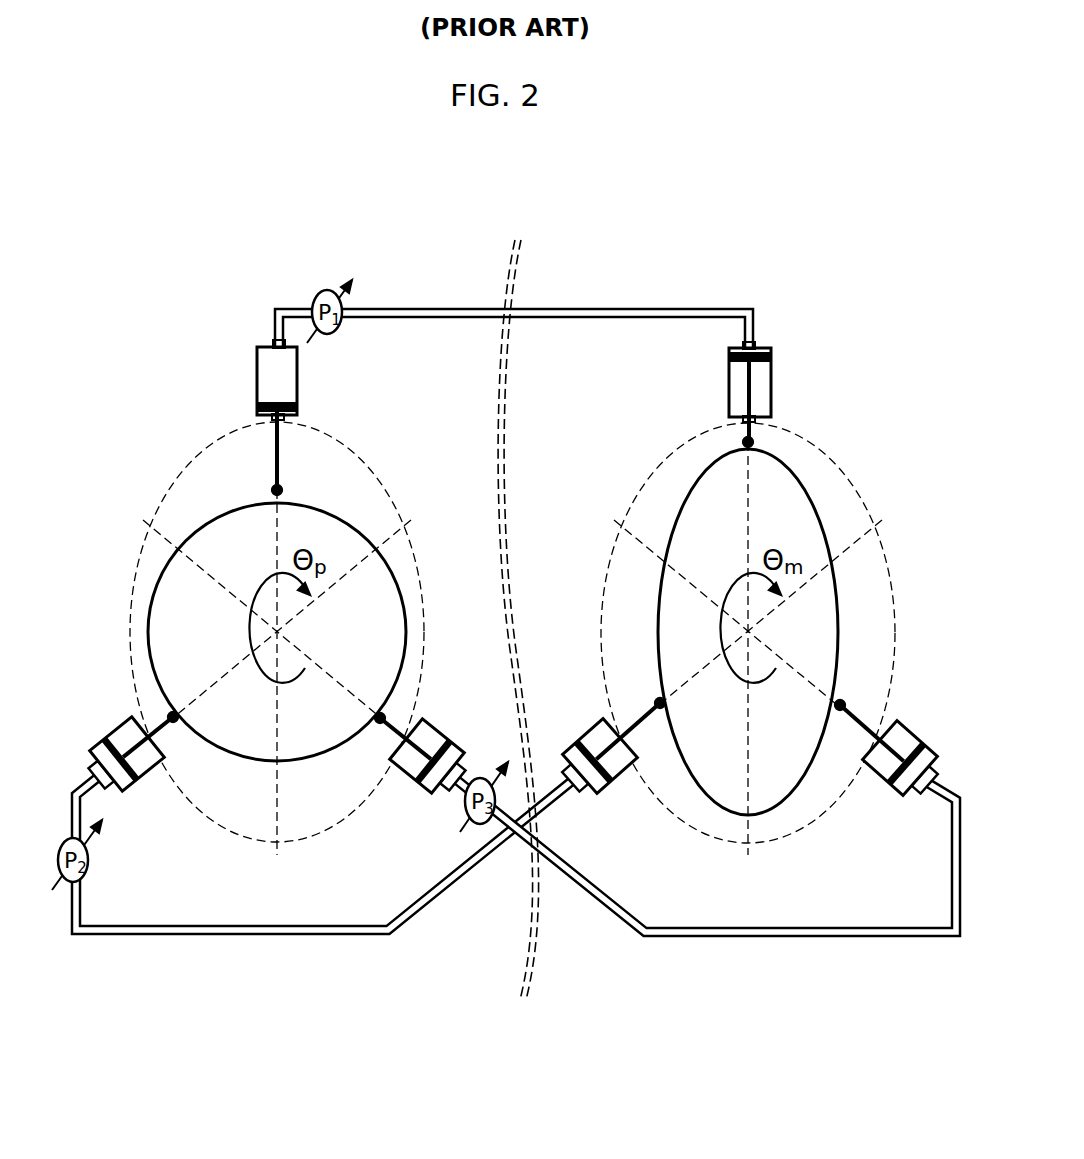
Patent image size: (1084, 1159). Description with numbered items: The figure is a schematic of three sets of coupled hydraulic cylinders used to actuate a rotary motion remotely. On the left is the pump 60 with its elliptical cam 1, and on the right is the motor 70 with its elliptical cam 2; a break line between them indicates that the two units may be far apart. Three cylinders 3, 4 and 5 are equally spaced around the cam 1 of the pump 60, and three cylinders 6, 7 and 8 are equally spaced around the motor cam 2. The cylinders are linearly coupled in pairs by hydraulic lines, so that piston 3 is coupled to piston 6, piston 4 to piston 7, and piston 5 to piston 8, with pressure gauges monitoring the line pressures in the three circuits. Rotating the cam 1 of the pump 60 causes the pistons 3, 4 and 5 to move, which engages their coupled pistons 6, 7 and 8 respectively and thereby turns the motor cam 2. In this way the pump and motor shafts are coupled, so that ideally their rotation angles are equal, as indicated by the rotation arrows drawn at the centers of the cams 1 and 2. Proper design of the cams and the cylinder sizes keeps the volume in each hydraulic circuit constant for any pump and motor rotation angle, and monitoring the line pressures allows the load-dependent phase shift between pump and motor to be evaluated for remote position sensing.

The cam of the pump 1 is at (168, 586).
The motor cam 2 is at (708, 485).
The piston 3 is at (257, 365).
The piston 4 is at (127, 720).
The piston 5 is at (437, 727).
The piston 6 is at (728, 383).
The piston 7 is at (603, 727).
The piston 8 is at (915, 732).
The pump 60 is at (162, 435).
The motor 70 is at (850, 437).